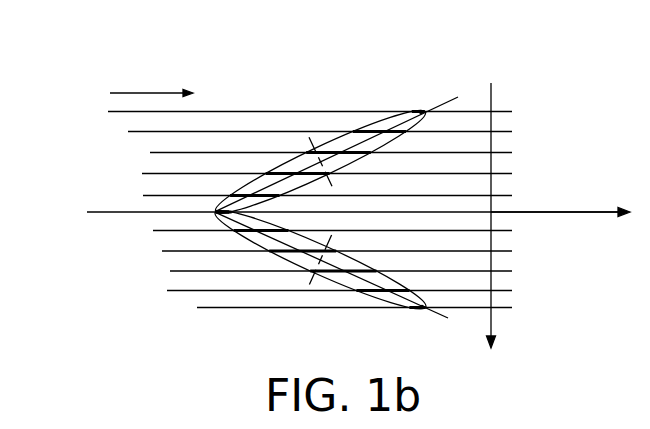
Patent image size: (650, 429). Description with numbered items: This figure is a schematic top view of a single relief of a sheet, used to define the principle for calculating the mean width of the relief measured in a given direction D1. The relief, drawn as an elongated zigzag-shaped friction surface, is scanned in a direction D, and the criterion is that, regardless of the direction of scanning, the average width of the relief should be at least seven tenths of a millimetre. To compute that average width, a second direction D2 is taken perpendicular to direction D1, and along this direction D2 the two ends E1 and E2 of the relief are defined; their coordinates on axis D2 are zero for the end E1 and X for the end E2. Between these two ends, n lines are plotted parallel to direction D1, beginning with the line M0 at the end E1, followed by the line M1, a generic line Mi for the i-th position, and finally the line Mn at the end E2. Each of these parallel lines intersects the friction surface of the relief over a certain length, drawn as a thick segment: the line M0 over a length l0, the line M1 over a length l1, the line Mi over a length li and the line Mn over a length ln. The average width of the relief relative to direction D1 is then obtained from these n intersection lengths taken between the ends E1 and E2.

The intersection length l0 is at (420, 112).
The intersection length l1 is at (358, 124).
The intersection length li is at (223, 193).
The intersection length ln is at (415, 310).
The end of the relief E1 is at (425, 94).
The end of the relief E2 is at (416, 328).
The line parallel to direction D1 M0 is at (326, 109).
The line parallel to direction D1 M1 is at (332, 133).
The line parallel to direction D1 Mi is at (356, 196).
The line parallel to direction D1 Mn is at (367, 310).
The direction of scanning D is at (151, 83).
The direction of measurement D1 is at (560, 198).
The perpendicular direction D2 is at (503, 358).
The coordinate of second end X is at (497, 213).